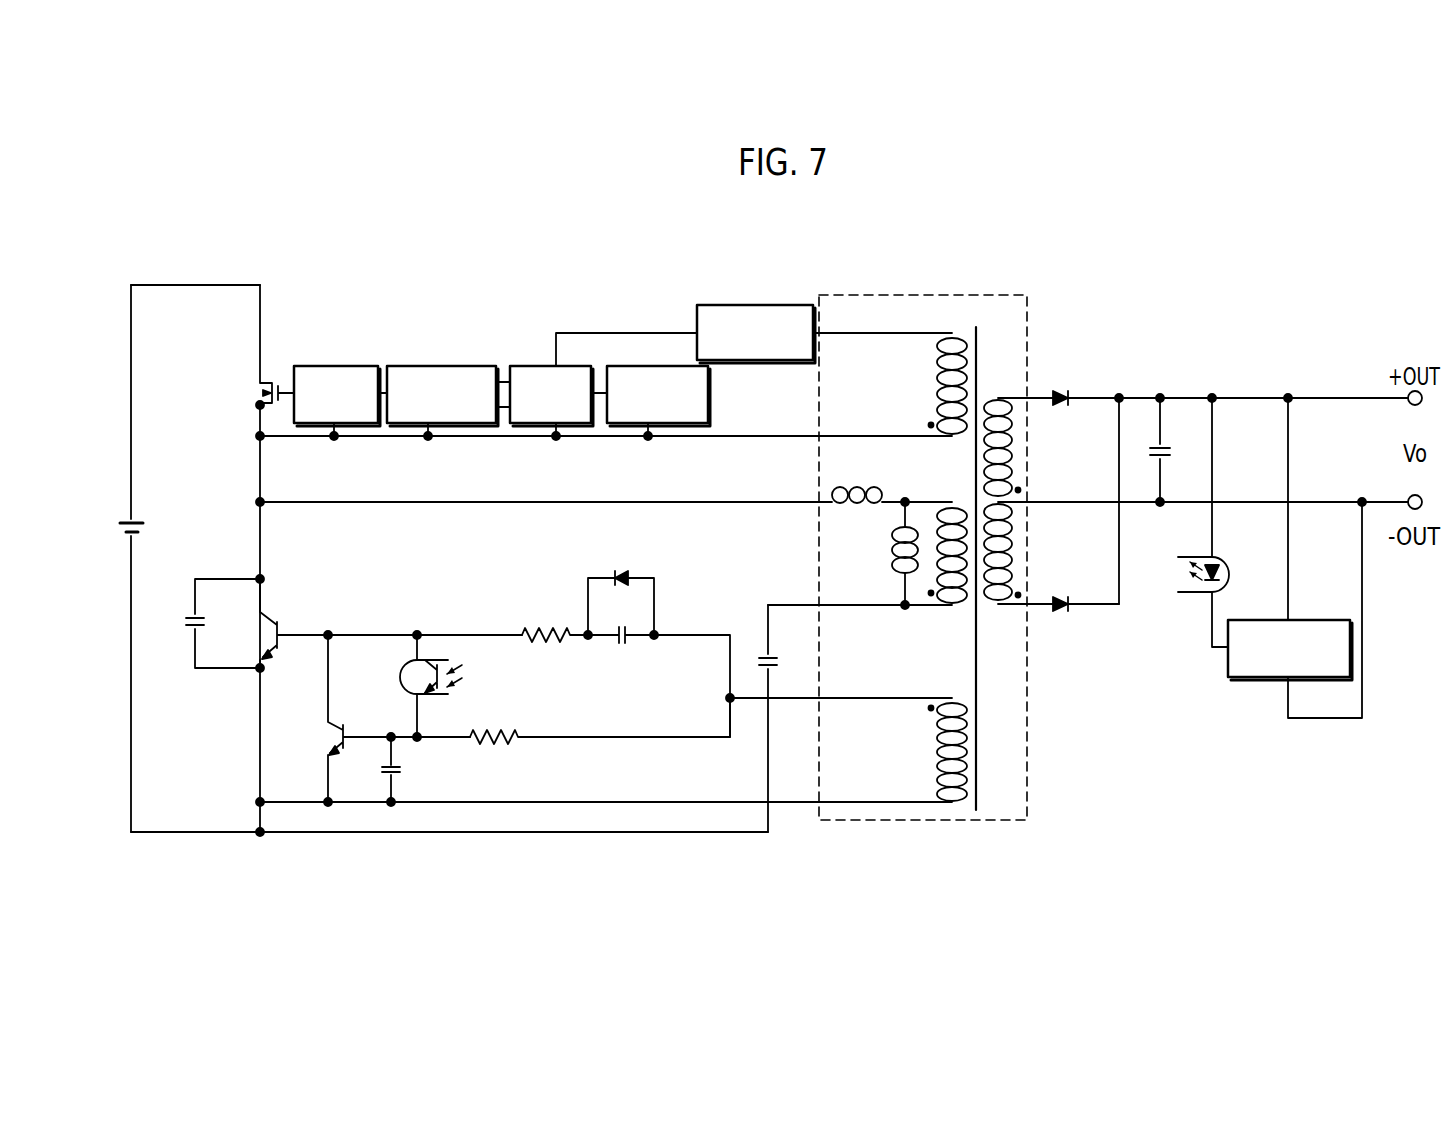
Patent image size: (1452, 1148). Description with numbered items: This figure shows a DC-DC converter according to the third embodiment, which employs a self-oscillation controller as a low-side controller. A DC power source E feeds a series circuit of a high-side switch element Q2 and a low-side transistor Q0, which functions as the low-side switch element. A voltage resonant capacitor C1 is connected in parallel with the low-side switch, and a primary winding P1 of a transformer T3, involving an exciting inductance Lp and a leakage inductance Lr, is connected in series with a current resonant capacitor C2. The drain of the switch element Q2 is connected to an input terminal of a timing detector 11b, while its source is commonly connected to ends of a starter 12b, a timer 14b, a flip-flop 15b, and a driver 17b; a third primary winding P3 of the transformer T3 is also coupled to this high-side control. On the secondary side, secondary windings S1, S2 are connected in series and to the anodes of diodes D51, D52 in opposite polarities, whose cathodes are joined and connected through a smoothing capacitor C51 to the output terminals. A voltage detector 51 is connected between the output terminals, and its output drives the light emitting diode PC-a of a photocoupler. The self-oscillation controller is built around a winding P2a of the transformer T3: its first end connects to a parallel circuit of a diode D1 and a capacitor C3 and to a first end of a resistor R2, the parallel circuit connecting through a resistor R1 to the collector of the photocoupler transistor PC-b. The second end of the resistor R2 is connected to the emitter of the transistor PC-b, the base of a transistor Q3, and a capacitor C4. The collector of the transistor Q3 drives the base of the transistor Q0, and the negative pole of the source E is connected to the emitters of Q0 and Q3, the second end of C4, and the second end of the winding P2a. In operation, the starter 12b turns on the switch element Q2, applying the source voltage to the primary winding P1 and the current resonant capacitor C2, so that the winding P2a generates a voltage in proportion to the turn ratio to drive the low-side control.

The timing detector 11b is at (744, 305).
The starter 12b is at (708, 393).
The timer 14b is at (534, 366).
The flip-flop 15b is at (449, 366).
The driver 17b is at (344, 366).
The voltage detector 51 is at (1317, 620).
The transformer T3 is at (923, 557).
The primary winding P1 is at (867, 553).
The winding P2a is at (613, 750).
The third primary winding P3 is at (879, 383).
The secondary winding S1 is at (1196, 450).
The secondary winding S2 is at (1051, 554).
The leakage inductance Lr is at (582, 516).
The exciting inductance Lp is at (892, 553).
The transistor Q0 is at (294, 631).
The switch element Q2 is at (261, 349).
The transistor Q3 is at (397, 720).
The voltage resonant capacitor C1 is at (225, 623).
The current resonant capacitor C2 is at (777, 718).
The capacitor C3 is at (659, 682).
The capacitor C4 is at (404, 769).
The smoothing capacitor C51 is at (1178, 450).
The resistor R1 is at (555, 617).
The resistor R2 is at (600, 721).
The diode D1 is at (621, 590).
The diode D51 is at (1226, 386).
The diode D52 is at (1082, 504).
The light emitting diode of photocoupler PC-a is at (1190, 596).
The phototransistor of photocoupler PC-b is at (446, 655).
The DC power source E is at (141, 558).